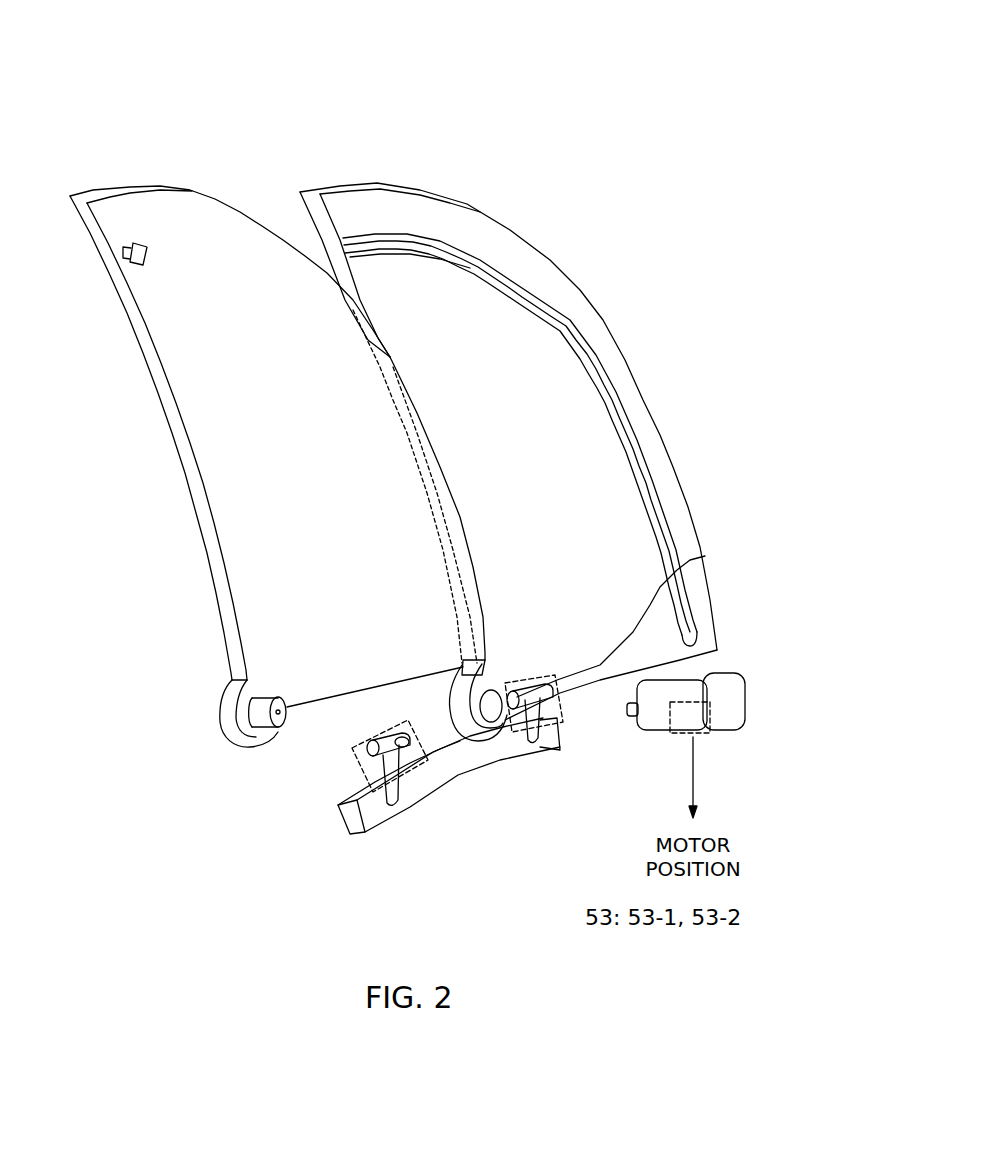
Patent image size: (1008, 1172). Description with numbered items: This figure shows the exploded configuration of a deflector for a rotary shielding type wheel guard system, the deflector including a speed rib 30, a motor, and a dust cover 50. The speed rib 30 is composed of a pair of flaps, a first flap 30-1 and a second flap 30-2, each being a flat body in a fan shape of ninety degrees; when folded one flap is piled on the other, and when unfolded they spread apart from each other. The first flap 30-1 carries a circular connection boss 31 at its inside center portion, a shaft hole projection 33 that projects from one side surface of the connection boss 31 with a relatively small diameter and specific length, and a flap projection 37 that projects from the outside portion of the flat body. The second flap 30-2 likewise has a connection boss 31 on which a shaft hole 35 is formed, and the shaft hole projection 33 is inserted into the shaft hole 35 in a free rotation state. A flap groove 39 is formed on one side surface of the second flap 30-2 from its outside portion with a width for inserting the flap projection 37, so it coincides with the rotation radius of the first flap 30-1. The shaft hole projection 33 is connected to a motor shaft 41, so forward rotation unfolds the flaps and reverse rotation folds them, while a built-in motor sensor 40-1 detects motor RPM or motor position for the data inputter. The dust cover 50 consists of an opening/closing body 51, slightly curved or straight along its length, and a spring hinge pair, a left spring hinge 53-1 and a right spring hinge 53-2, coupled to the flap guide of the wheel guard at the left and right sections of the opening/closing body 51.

The speed rib 30 is at (363, 73).
The first flap 30-1 is at (183, 220).
The second flap 30-2 is at (358, 215).
The connection boss 31 is at (233, 702).
The shaft hole projection 33 is at (257, 717).
The shaft hole 35 is at (505, 742).
The flap projection 37 is at (128, 250).
The flap groove 39 is at (560, 324).
The motor sensor 40-1 is at (707, 733).
The motor shaft 41 is at (632, 718).
The dust cover 50 is at (210, 800).
The opening/closing body 51 is at (350, 822).
The left spring hinge 53-1 is at (352, 758).
The right spring hinge 53-2 is at (677, 570).